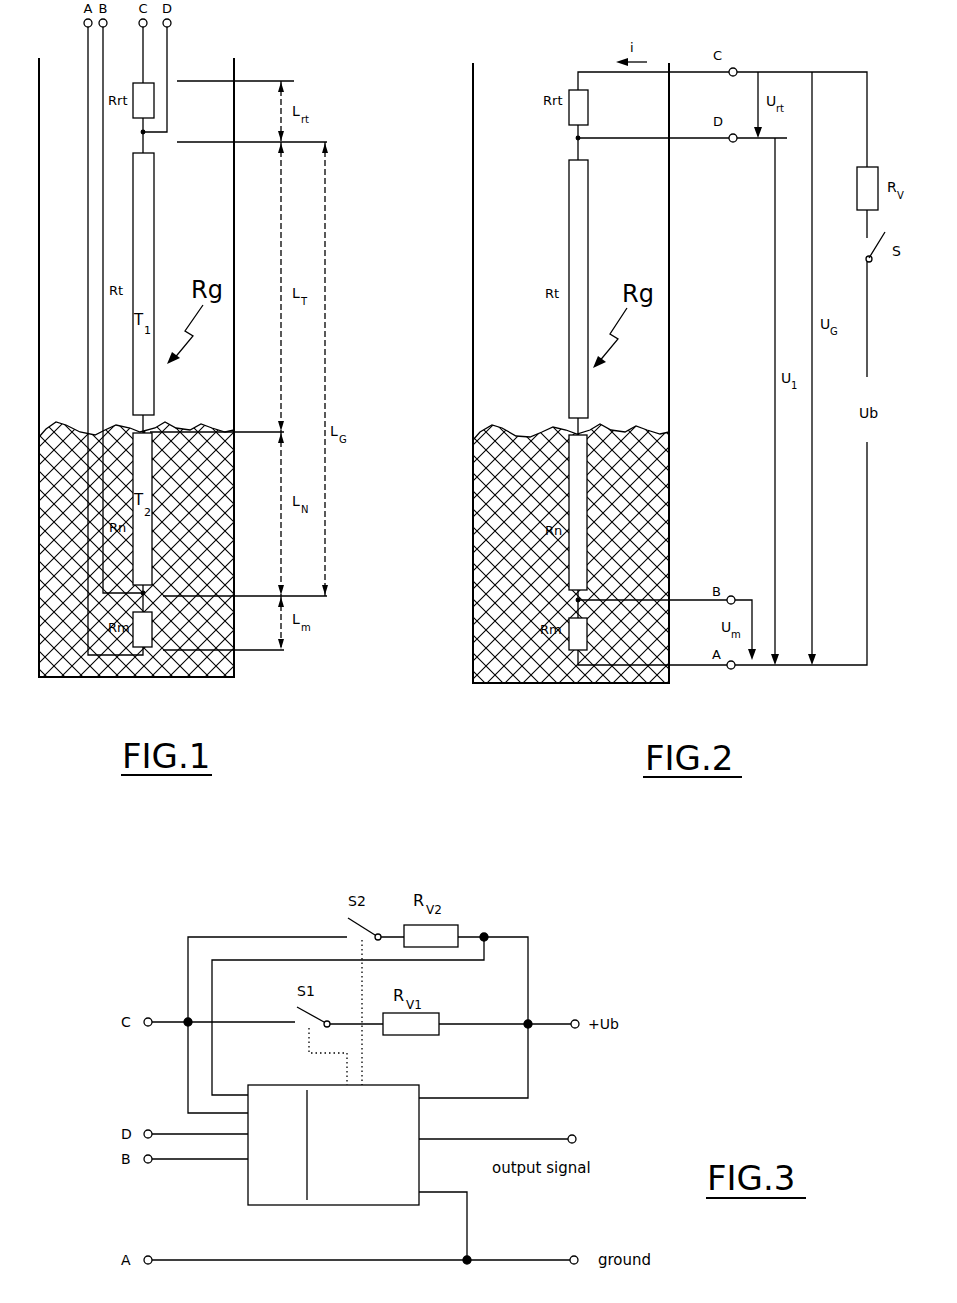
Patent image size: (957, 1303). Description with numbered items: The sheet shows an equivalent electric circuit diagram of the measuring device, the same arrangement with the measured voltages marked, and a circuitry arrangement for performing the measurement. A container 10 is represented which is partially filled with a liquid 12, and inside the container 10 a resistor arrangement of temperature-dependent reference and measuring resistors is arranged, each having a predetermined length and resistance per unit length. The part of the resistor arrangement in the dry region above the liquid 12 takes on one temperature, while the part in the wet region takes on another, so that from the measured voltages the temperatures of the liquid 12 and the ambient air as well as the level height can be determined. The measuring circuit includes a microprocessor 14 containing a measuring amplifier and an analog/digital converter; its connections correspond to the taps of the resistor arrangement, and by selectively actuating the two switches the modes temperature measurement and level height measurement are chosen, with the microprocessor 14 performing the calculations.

In FIG. 1, the container 10 is at (232, 678).
In FIG. 2, the container 10 is at (480, 685).
In FIG. 1, the liquid 12 is at (52, 664).
In FIG. 2, the liquid 12 is at (530, 671).
In FIG. 3, the microprocessor 14 is at (364, 1197).